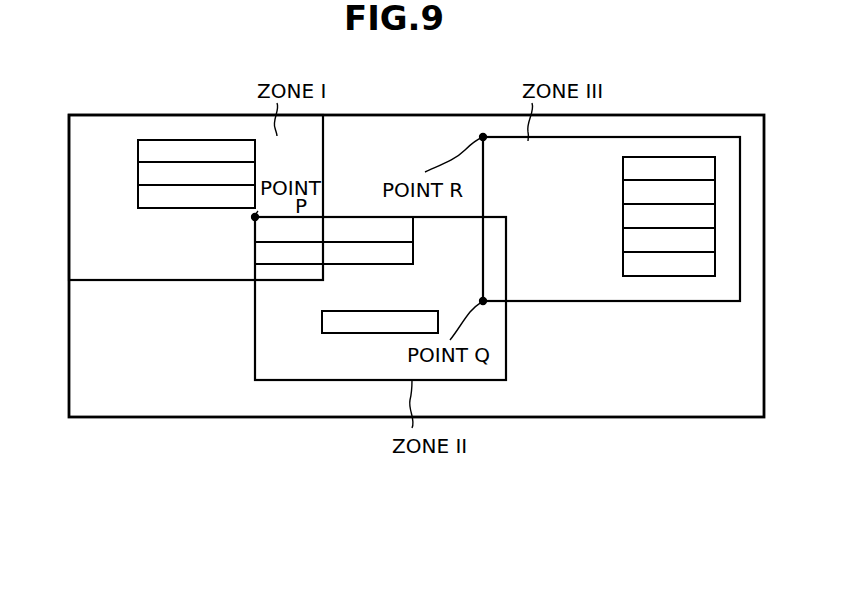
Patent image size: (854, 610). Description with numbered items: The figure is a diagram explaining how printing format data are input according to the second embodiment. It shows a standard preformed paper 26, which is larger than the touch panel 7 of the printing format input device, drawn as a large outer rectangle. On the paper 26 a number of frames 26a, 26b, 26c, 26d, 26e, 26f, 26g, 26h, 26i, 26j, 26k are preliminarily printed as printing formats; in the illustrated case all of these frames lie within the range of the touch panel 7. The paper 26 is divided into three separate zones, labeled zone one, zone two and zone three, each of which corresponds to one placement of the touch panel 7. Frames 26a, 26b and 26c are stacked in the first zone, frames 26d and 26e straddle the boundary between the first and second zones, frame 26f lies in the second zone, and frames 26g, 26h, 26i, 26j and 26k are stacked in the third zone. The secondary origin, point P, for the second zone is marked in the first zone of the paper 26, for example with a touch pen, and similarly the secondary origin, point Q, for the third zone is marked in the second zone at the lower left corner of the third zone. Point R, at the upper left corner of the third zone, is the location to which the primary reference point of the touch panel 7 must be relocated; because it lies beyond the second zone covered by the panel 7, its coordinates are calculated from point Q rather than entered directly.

The standard preformed paper 26 is at (588, 416).
The touch panel 7 is at (158, 280).
The frame 26a is at (138, 153).
The frame 26b is at (138, 177).
The frame 26c is at (138, 200).
The frame 26d is at (255, 230).
The frame 26e is at (255, 255).
The frame 26f is at (322, 333).
The frame 26g is at (623, 162).
The frame 26h is at (623, 187).
The frame 26i is at (623, 215).
The frame 26j is at (623, 243).
The frame 26k is at (623, 270).